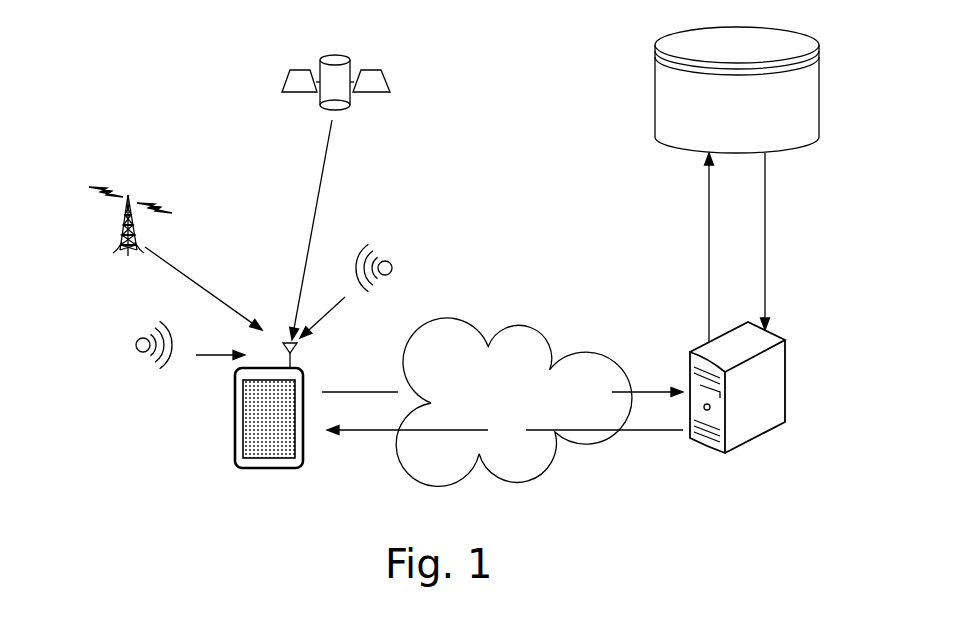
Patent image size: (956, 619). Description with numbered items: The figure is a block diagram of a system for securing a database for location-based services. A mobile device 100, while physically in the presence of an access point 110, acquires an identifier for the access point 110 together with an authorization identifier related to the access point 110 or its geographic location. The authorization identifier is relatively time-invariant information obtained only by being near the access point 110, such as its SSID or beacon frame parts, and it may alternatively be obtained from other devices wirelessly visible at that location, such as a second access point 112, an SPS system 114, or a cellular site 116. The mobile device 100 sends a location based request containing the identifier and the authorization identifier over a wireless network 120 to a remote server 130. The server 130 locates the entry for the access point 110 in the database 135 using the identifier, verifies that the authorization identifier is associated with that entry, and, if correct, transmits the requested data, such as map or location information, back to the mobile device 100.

The mobile device 100 is at (238, 455).
The access point 110 is at (136, 344).
The access point 112 is at (394, 261).
The SPS system 114 is at (385, 73).
The cellular site 116 is at (128, 195).
The wireless network 120 is at (545, 330).
The server 130 is at (785, 375).
The database 135 is at (655, 90).